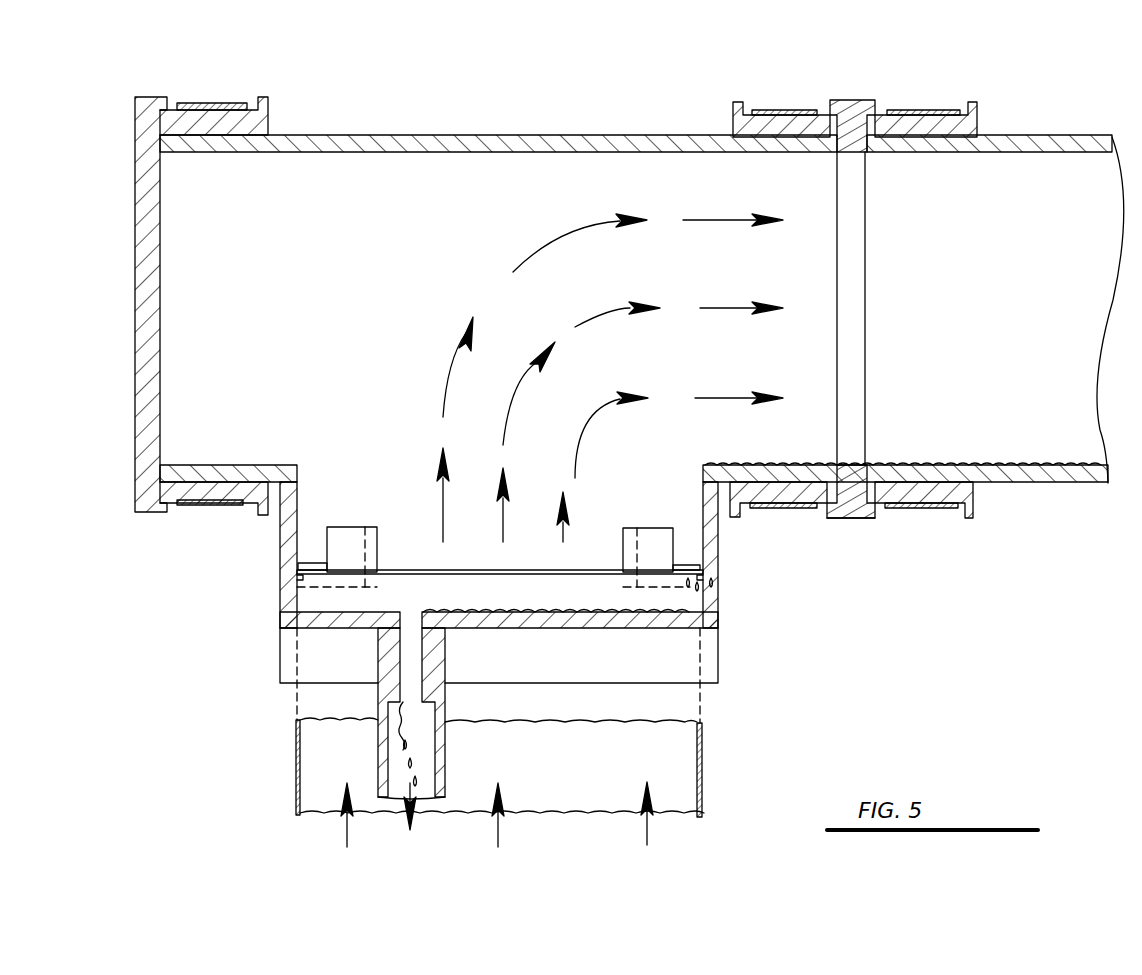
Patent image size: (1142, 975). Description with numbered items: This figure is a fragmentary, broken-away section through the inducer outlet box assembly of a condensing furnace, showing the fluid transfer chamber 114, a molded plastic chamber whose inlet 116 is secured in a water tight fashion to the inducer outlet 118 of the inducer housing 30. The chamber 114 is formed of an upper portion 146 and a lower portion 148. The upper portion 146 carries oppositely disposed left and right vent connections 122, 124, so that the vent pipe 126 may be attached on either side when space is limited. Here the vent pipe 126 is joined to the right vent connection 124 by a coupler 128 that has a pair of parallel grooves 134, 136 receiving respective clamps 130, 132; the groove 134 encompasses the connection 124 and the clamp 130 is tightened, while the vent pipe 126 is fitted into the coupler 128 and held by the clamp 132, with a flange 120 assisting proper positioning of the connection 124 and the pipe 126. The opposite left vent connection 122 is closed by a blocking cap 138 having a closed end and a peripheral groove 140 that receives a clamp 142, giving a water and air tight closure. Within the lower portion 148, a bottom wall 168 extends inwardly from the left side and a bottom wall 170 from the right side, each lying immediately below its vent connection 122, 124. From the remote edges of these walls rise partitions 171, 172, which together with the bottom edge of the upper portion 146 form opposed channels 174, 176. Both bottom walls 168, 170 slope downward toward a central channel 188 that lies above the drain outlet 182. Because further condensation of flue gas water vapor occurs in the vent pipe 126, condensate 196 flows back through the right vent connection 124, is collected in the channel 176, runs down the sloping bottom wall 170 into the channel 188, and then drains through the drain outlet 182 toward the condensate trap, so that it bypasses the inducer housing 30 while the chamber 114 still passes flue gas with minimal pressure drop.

The inducer housing 30 is at (297, 782).
The fluid transfer chamber 114 is at (474, 118).
The inlet 116 is at (302, 664).
The inducer outlet 118 is at (683, 605).
The flange 120 is at (868, 522).
The left vent connection 122 is at (192, 135).
The right vent connection 124 is at (790, 130).
The vent pipe 126 is at (1063, 138).
The coupler 128 is at (858, 545).
The clamp 130 is at (770, 508).
The clamp 132 is at (912, 512).
The groove 134 is at (747, 104).
The groove 136 is at (965, 104).
The blocking cap 138 is at (135, 262).
The groove 140 is at (167, 108).
The clamp 142 is at (185, 505).
The upper portion 146 is at (250, 543).
The lower portion 148 is at (250, 608).
The bottom wall 168 is at (312, 565).
The bottom wall 170 is at (687, 563).
The partition 171 is at (348, 525).
The partition 172 is at (640, 525).
The channel 174 is at (307, 533).
The channel 176 is at (693, 552).
The drain outlet 182 is at (417, 703).
The channel 188 is at (500, 586).
The condensate 196 is at (743, 462).